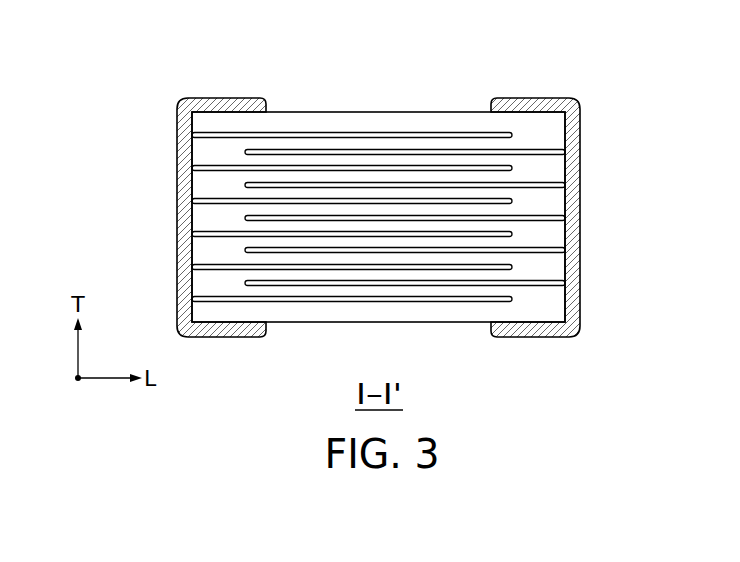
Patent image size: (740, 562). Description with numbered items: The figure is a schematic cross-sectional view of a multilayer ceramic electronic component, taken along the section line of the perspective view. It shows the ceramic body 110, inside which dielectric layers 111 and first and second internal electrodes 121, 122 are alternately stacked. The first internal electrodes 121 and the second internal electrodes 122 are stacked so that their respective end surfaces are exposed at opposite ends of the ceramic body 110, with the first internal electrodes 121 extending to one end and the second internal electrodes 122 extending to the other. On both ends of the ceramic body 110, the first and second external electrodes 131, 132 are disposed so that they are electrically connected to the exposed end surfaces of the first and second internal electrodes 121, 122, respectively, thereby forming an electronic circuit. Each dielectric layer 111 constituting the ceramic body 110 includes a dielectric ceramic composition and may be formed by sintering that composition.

The ceramic body 110 is at (337, 188).
The dielectric layer 111 is at (216, 157).
The first internal electrode 121 is at (212, 133).
The second internal electrode 122 is at (246, 186).
The first external electrode 131 is at (222, 100).
The second external electrode 132 is at (538, 100).